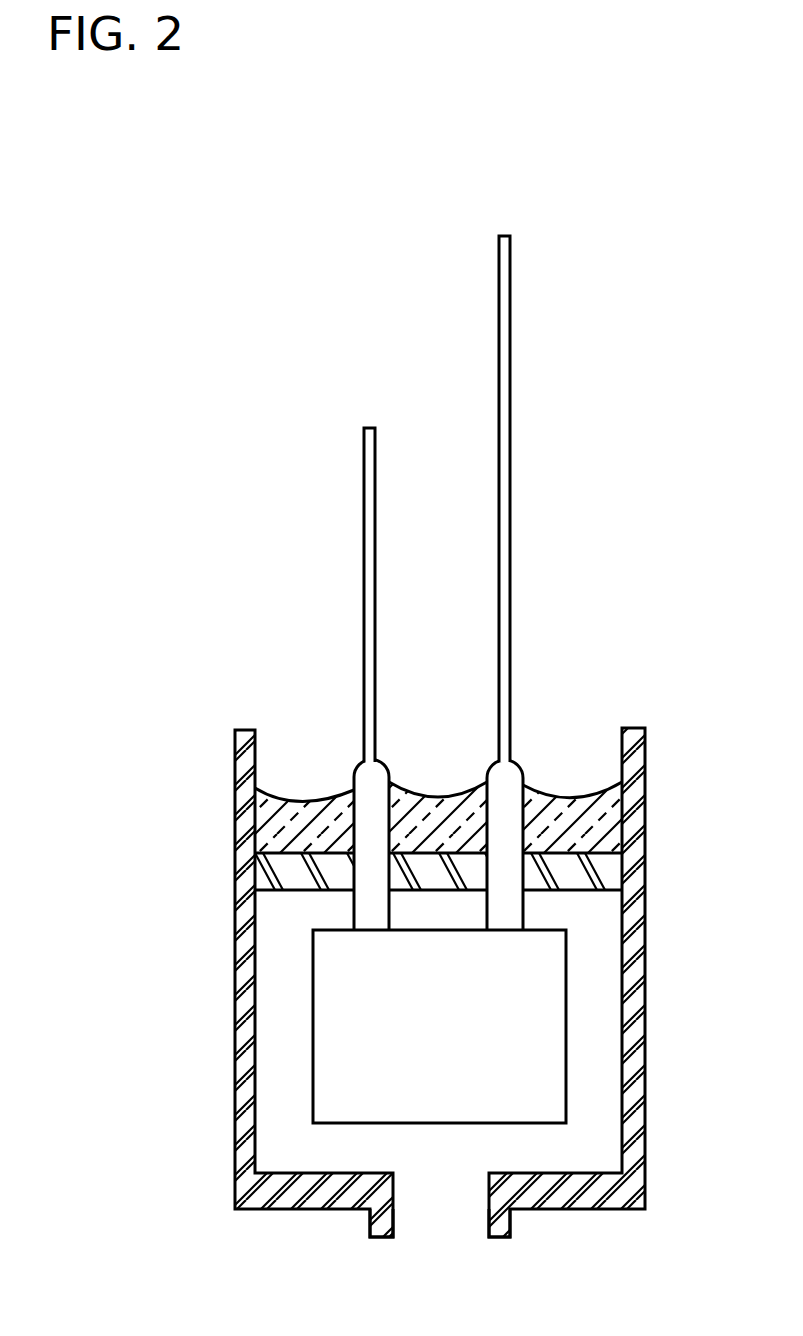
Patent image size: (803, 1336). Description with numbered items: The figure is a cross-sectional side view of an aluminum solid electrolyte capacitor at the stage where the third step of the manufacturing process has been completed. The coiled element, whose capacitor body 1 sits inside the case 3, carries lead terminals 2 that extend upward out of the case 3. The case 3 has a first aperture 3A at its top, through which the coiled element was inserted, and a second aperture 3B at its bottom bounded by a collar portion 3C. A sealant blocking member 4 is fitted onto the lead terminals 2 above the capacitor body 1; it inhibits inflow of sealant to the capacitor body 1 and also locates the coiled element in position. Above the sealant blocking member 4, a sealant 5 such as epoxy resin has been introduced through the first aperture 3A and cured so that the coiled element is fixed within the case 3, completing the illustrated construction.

The capacitor body 1 is at (552, 1007).
The lead terminals 2 is at (375, 497).
The case 3 is at (630, 752).
The first aperture 3A is at (548, 728).
The second aperture 3B is at (440, 1226).
The collar portion 3C is at (506, 1212).
The sealant blocking member 4 is at (605, 876).
The sealant 5 is at (585, 820).